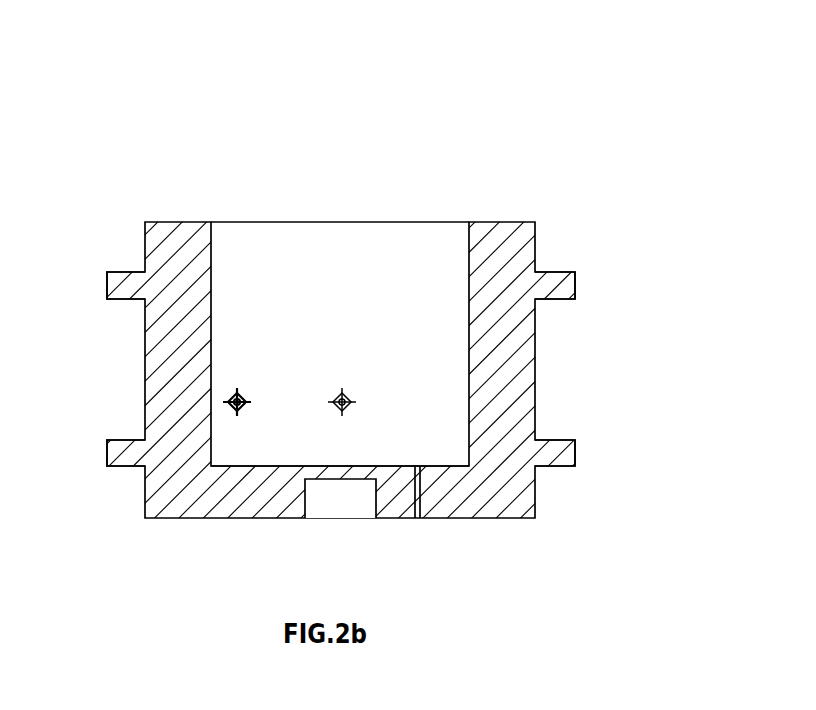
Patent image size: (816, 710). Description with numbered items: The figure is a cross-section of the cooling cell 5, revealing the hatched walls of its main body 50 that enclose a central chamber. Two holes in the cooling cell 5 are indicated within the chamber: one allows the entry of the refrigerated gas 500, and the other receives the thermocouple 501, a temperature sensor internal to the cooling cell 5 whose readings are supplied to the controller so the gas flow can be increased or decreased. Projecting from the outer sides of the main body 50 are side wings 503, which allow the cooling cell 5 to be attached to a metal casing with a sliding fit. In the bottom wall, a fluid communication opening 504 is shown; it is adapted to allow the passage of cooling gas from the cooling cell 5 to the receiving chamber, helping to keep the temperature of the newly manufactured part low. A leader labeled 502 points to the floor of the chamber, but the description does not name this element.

The cooling cell 5 is at (408, 338).
The main body 50 is at (517, 345).
The refrigerated gas entry hole 500 is at (238, 393).
The thermocouple 501 is at (342, 393).
The cavity floor 502 is at (362, 466).
The side wings 503 is at (126, 284).
The fluid communication opening 504 is at (422, 522).